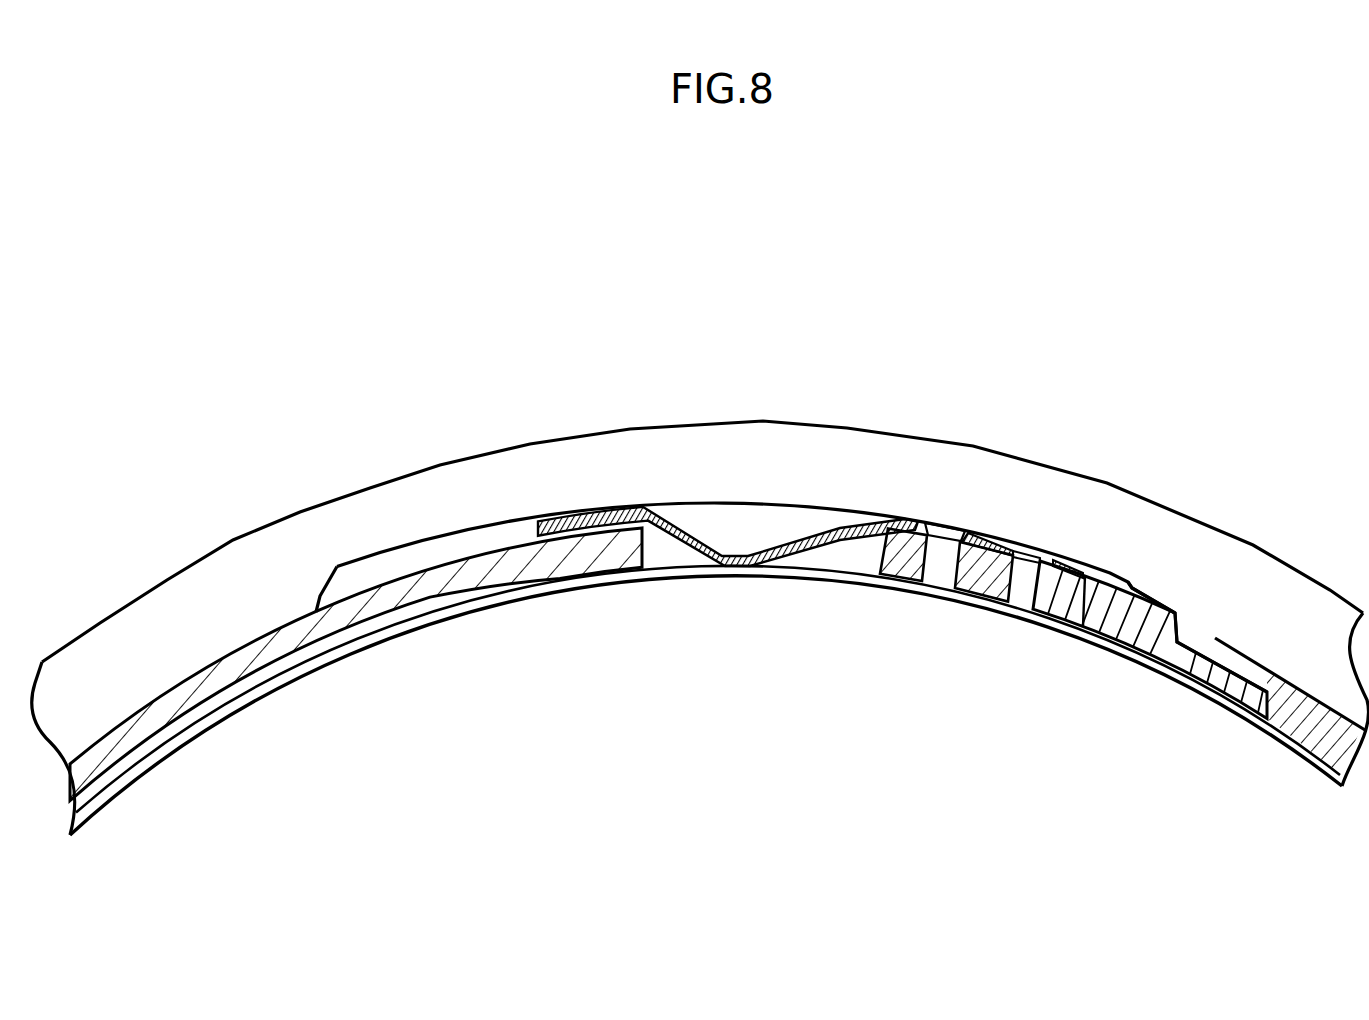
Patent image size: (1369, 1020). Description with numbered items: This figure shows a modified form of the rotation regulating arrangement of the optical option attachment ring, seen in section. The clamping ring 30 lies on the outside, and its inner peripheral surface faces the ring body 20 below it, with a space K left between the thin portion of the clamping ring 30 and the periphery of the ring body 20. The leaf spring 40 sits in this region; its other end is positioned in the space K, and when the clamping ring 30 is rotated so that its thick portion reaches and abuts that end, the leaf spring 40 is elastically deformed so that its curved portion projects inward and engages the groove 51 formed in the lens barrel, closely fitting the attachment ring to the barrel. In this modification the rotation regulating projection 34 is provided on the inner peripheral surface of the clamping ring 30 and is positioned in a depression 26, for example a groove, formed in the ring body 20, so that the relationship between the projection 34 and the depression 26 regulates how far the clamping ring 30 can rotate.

The clamping ring 30 is at (665, 446).
The space K is at (453, 543).
The ring body 20 is at (470, 593).
The groove 51 is at (561, 590).
The leaf spring 40 is at (822, 550).
The rotation regulating projection 34 is at (1195, 637).
The depression 26 is at (1257, 673).